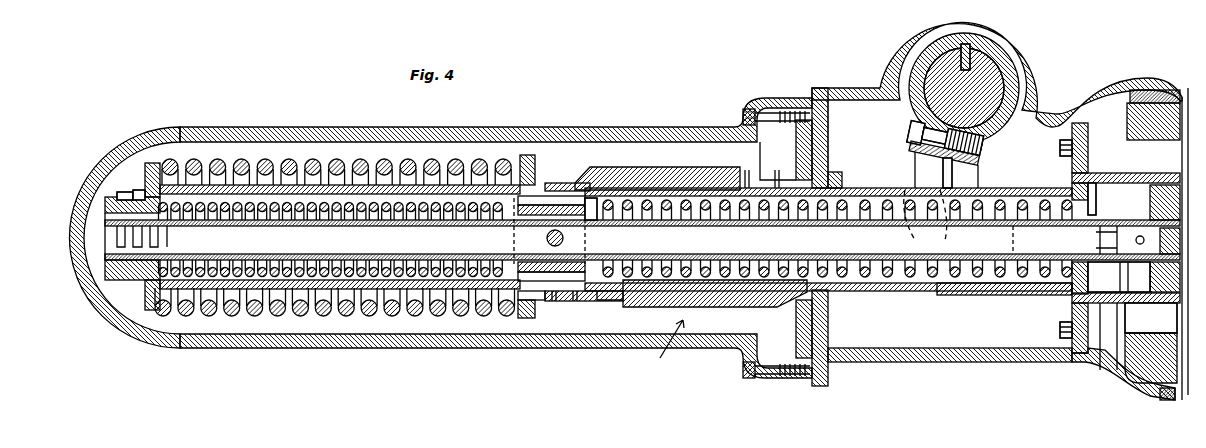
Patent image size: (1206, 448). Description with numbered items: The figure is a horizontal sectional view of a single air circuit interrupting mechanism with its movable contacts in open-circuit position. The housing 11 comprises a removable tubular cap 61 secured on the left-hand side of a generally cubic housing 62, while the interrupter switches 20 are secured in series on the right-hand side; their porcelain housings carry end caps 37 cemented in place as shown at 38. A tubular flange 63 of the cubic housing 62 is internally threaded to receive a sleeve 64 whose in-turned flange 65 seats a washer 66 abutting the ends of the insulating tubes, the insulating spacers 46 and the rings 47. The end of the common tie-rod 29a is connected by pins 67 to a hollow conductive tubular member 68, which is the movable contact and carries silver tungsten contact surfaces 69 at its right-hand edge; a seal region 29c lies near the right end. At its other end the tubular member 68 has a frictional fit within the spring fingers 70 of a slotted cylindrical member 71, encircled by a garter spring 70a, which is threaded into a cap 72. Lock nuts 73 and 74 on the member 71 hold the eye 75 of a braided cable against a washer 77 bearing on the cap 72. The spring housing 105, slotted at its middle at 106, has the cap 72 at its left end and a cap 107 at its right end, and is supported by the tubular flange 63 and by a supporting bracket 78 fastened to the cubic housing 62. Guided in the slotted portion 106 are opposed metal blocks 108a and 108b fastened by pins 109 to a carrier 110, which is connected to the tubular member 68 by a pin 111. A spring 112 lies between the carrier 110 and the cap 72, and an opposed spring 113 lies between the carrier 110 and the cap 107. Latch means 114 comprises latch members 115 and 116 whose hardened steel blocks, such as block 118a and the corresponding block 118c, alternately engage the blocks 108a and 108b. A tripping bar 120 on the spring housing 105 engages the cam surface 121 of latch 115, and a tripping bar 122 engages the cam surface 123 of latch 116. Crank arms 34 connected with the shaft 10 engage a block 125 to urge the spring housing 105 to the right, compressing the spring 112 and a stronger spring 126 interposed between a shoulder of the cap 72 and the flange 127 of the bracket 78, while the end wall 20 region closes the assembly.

The shaft 10 is at (992, 82).
The housing 11 is at (772, 100).
The interrupter switches 20 is at (1177, 69).
The common tie-rod 29a is at (1100, 249).
The rod seal 29c is at (1166, 81).
The crank arms 34 is at (922, 152).
The end caps 37 is at (1150, 396).
The cement joint 38 is at (1178, 398).
The insulating spacers 46 is at (1160, 278).
The rings 47 is at (1172, 241).
The tubular cap 61 is at (502, 127).
The cubic housing 62 is at (908, 45).
The tubular flange 63 is at (1072, 178).
The sleeve 64 is at (1180, 168).
The in-turned flange 65 is at (1150, 194).
The washer 66 is at (1150, 214).
The pins 67 is at (1110, 230).
The tubular member 68 is at (838, 250).
The contact surfaces 69 is at (1150, 241).
The spring fingers 70 is at (472, 262).
The garter spring 70a is at (470, 268).
The slotted cylindrical member 71 is at (166, 232).
The cap 72 is at (147, 175).
The lock nut 73 is at (108, 268).
The lock nut 74 is at (118, 282).
The eye 75 is at (122, 195).
The washer 77 is at (133, 280).
The supporting bracket 78 is at (800, 156).
The spring housing 105 is at (352, 158).
The slotted portion 106 is at (540, 186).
The cap 107 is at (1065, 298).
The metal block 108a is at (575, 183).
The metal block 108b is at (518, 310).
The pins 109 is at (592, 212).
The carrier 110 is at (520, 260).
The pin 111 is at (570, 239).
The spring 112 is at (328, 200).
The spring 113 is at (783, 212).
The latch means 114 is at (670, 347).
The latch member 115 is at (658, 167).
The latch member 116 is at (650, 300).
The hardened steel block 118a is at (752, 178).
The port 118c is at (605, 302).
The tripping bar 120 is at (830, 170).
The cam surface 121 is at (800, 140).
The tripping bar 122 is at (382, 305).
The cam surface 123 is at (545, 300).
The block 125 is at (942, 292).
The stronger spring 126 is at (273, 310).
The flange 127 is at (530, 155).